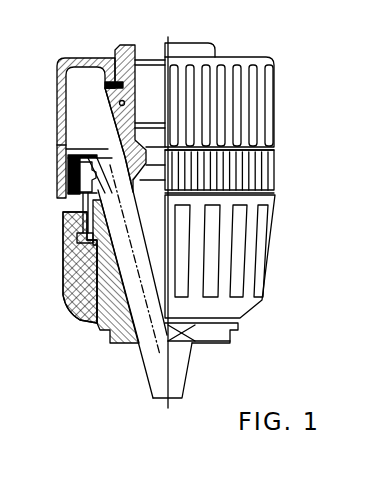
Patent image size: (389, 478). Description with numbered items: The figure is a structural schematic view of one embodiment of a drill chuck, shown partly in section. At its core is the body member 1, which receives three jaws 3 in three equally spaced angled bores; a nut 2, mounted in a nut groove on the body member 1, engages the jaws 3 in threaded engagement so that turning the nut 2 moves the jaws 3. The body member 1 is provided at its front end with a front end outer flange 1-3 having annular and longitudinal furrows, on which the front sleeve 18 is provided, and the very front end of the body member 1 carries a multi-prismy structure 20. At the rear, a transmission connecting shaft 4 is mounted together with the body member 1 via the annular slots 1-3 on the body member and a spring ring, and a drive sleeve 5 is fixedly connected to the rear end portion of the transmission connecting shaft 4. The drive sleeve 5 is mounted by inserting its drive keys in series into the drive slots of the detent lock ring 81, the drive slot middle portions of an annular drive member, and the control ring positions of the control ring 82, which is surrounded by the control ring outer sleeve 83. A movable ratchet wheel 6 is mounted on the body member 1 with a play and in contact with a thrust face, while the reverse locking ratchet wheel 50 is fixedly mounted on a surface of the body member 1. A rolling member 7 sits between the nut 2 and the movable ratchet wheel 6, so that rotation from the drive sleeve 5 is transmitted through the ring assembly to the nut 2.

The body member 1 is at (80, 308).
The front end outer flange 1-3 is at (103, 84).
The nut 2 is at (66, 248).
The jaws 3 is at (115, 343).
The transmission connecting shaft 4 is at (118, 50).
The drive sleeve 5 is at (217, 97).
The movable ratchet wheel 6 is at (72, 202).
The rolling member 7 is at (70, 233).
The front sleeve 18 is at (72, 297).
The multi-prismy structure 20 is at (183, 334).
The reverse locking ratchet wheel 50 is at (87, 160).
The detent lock ring 81 is at (68, 172).
The control ring 82 is at (68, 156).
The control ring outer sleeve 83 is at (68, 186).